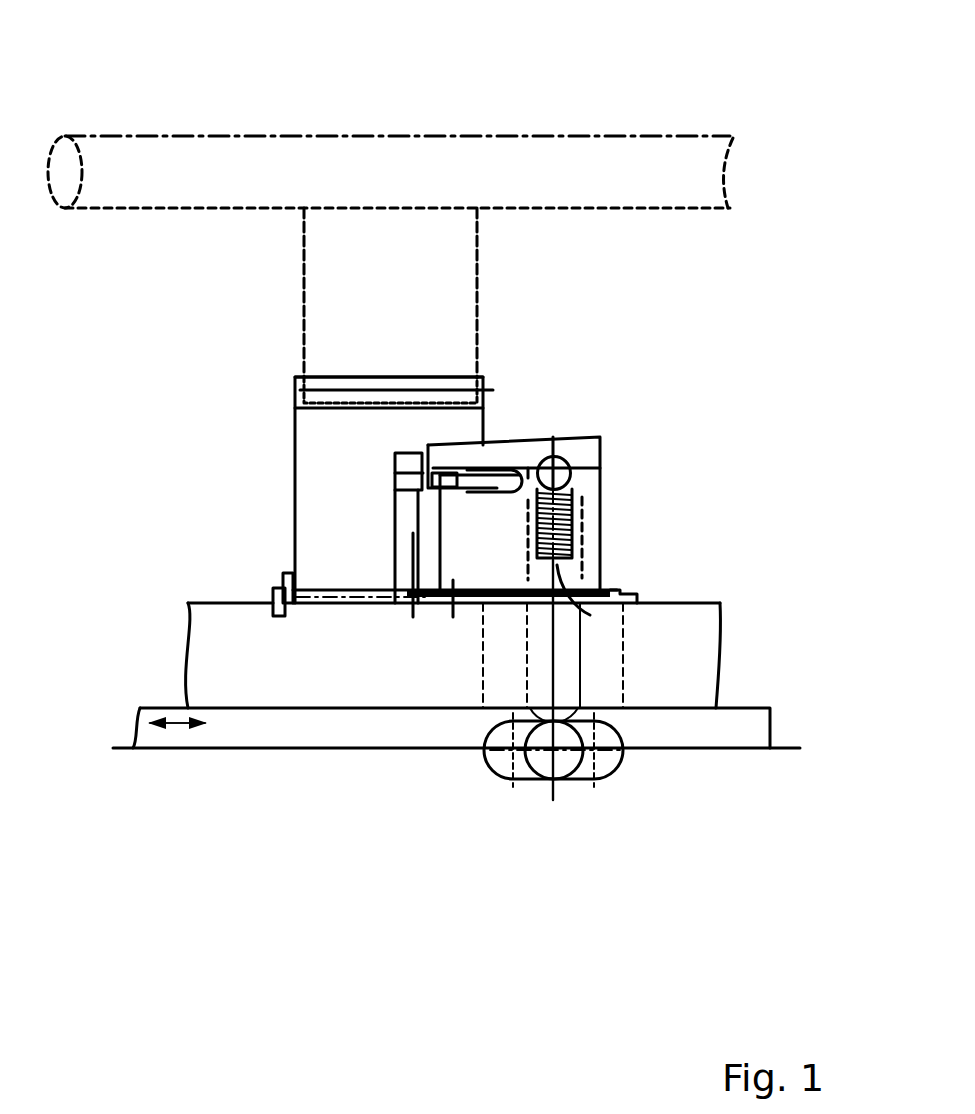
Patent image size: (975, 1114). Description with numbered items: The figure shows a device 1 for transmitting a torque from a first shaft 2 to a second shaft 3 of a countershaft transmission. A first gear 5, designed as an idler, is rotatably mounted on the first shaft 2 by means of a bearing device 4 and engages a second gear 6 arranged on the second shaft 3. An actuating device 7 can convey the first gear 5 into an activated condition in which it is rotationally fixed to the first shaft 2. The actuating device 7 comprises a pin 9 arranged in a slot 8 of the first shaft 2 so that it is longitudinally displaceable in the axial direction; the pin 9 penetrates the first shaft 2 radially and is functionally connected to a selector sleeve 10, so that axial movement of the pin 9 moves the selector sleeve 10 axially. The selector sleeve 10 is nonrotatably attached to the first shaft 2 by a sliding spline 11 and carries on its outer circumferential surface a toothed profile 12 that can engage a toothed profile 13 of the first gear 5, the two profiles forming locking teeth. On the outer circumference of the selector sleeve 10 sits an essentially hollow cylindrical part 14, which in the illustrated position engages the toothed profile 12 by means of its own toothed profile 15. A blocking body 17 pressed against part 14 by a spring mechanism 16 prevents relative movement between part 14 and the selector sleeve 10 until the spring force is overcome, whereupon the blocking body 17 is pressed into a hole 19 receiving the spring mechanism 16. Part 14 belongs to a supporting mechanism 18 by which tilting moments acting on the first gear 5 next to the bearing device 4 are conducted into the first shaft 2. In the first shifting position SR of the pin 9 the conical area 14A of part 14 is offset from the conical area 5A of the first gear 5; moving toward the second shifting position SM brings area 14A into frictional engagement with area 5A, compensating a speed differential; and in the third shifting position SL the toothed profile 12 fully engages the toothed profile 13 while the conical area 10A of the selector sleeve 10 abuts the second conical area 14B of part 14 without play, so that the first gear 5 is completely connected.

The device 1 is at (127, 103).
The first shaft 2 is at (210, 648).
The second shaft 3 is at (613, 178).
The bearing device 4 is at (333, 606).
The first gear 5 is at (358, 450).
The essentially conical area of the first gear 5A is at (453, 447).
The second gear 6 is at (357, 272).
The actuating device 7 is at (527, 792).
The slot 8 is at (605, 762).
The pin 9 is at (562, 758).
The selector sleeve 10 is at (590, 567).
The primarily conical area of the selector sleeve 10A is at (520, 447).
The sliding spline 11 is at (618, 588).
The toothed profile of the selector sleeve 12 is at (525, 432).
The toothed profile of the first gear 13 is at (407, 483).
The essentially hollow cylindrical part 14 is at (598, 445).
The essentially conical area of part 14 14A is at (525, 432).
The conical second area of part 14 14B is at (503, 455).
The toothed profile of part 14 15 is at (300, 390).
The spring mechanism 16 is at (576, 510).
The blocking body 17 is at (594, 433).
The supporting mechanism 18 is at (494, 432).
The hole 19 is at (590, 615).
The third shifting position SL is at (515, 780).
The second shifting position SM is at (553, 800).
The first shifting position SR is at (590, 765).